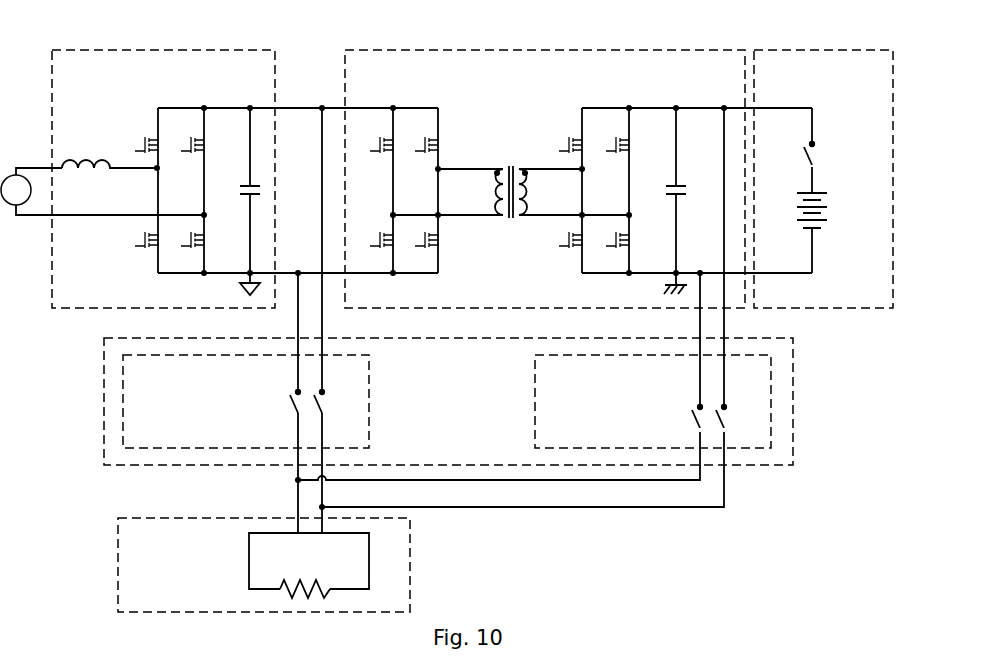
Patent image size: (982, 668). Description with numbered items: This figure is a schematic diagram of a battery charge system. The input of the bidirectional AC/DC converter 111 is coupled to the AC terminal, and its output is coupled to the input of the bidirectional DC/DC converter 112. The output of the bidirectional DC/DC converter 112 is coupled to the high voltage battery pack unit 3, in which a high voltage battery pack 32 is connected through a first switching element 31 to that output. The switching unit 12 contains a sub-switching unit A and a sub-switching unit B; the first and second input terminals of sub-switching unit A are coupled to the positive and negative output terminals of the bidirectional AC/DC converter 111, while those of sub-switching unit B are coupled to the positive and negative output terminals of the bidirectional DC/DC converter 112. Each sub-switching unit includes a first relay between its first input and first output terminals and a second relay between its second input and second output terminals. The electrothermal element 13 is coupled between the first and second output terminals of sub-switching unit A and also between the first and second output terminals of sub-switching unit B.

The bidirectional AC/DC converter 111 is at (200, 50).
The bidirectional DC/DC converter 112 is at (552, 50).
The high voltage battery pack unit 3 is at (823, 164).
The first switching element 31 is at (824, 158).
The high voltage battery pack 32 is at (828, 212).
The switching unit 12 is at (795, 362).
The electrothermal element 13 is at (413, 560).